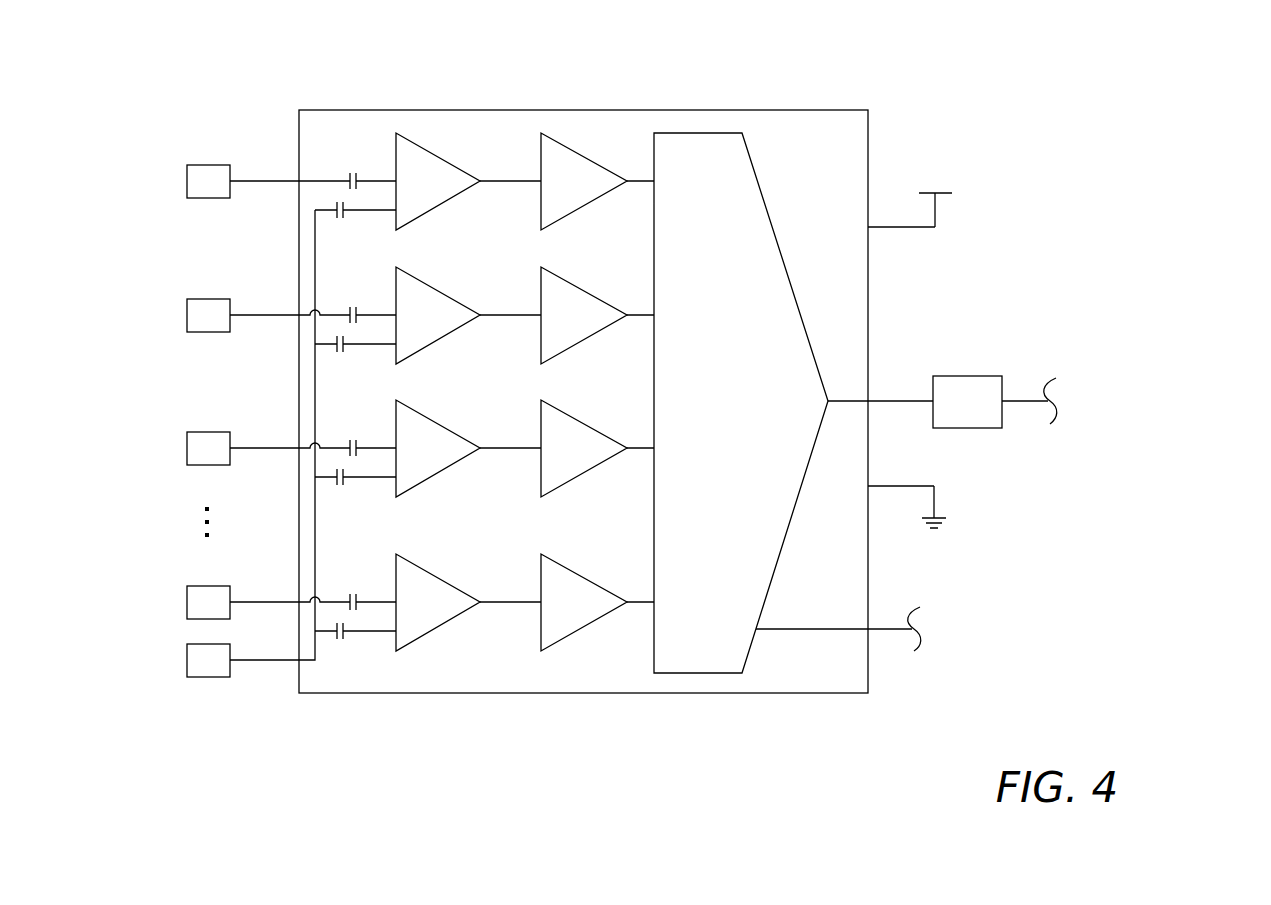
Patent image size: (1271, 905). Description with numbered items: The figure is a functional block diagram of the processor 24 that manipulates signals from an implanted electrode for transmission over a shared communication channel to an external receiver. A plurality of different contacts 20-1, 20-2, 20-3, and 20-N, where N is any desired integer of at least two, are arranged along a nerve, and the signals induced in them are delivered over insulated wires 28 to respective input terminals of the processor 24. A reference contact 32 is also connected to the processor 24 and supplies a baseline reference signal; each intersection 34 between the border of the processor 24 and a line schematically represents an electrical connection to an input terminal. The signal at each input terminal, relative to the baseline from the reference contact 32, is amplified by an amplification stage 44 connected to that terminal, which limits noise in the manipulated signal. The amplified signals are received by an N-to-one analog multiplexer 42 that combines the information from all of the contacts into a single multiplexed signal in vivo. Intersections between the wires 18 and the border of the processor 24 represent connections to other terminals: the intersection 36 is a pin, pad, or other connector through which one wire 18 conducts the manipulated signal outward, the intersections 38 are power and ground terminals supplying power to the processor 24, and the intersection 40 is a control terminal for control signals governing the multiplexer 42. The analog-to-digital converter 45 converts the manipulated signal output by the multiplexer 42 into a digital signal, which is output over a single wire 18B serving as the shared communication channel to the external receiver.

The contact 20-1 is at (200, 183).
The contact 20-2 is at (205, 310).
The contact 20-3 is at (200, 445).
The contact 20-N is at (200, 597).
The insulated wires 28 is at (268, 181).
The reference contact 32 is at (205, 663).
The intersections 34 is at (292, 599).
The amplification stage 44 is at (625, 133).
The multiplexer 42 is at (741, 403).
The processor 24 is at (780, 701).
The intersection 36 is at (876, 405).
The intersections 38 is at (872, 226).
The wires 18 is at (897, 230).
The intersection 40 is at (874, 627).
The analog-to-digital converter 45 is at (980, 376).
The single wire 18B is at (1024, 400).